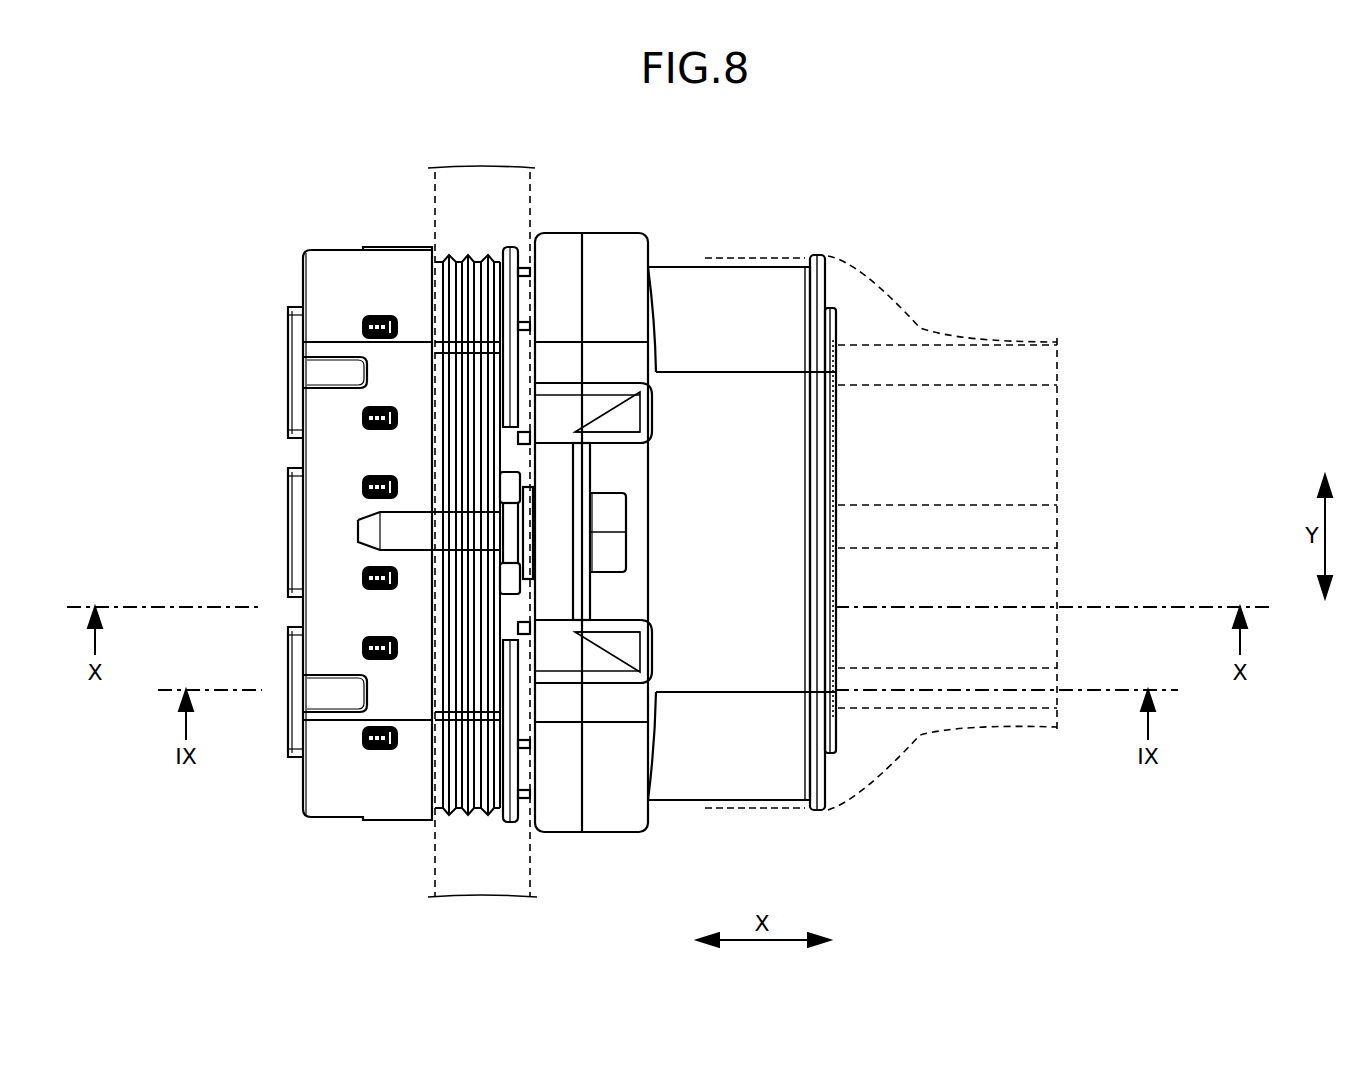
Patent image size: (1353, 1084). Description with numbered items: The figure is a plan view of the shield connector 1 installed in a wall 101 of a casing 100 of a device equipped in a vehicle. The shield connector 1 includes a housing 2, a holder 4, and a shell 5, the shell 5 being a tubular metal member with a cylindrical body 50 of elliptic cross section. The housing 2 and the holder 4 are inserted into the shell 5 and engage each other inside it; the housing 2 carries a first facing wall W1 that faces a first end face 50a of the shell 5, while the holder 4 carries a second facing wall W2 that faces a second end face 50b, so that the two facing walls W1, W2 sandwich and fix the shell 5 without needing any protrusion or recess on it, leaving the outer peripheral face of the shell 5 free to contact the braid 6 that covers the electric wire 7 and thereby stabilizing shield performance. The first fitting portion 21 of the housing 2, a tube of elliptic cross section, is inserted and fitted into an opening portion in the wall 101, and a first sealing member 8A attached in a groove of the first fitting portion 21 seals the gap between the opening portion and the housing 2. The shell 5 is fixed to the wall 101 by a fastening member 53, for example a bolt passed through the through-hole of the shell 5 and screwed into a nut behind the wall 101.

The shield connector 1 is at (732, 459).
The housing 2 is at (303, 238).
The first fitting portion 21 is at (378, 240).
The holder 4 is at (832, 275).
The shell 5 is at (605, 200).
The body 50 is at (672, 280).
The first end face 50a is at (527, 308).
The second end face 50b is at (845, 295).
The fastening member 53 is at (370, 518).
The braid 6 is at (969, 519).
The electric wire 7 is at (1020, 345).
The first sealing member 8A is at (468, 808).
The casing 100 is at (432, 491).
The wall 101 is at (433, 176).
The first facing wall W1 is at (515, 262).
The second facing wall W2 is at (814, 255).